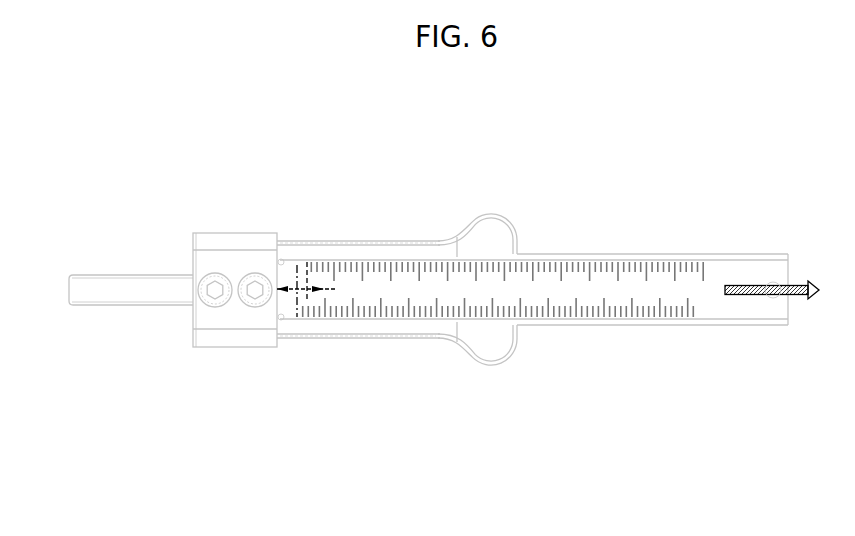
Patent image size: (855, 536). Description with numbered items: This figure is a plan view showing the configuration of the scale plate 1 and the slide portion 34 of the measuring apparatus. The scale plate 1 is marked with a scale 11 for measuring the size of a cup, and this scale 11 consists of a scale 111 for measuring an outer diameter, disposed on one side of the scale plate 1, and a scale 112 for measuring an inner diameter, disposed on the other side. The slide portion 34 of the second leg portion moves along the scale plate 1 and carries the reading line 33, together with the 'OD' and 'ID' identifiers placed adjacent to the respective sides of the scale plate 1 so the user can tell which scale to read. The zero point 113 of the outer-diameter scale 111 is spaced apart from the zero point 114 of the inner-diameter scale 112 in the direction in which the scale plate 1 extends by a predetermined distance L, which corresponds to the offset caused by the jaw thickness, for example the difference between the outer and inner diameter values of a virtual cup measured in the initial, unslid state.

The scale plate 1 is at (456, 310).
The scale 11 is at (533, 296).
The scale for measuring an outer diameter 111 is at (555, 268).
The scale for measuring an inner diameter 112 is at (573, 312).
The zero point of the scale for measuring an outer diameter 113 is at (307, 259).
The zero point of the scale for measuring an inner diameter 114 is at (297, 319).
The reading line 33 is at (458, 250).
The slide portion 34 is at (371, 341).